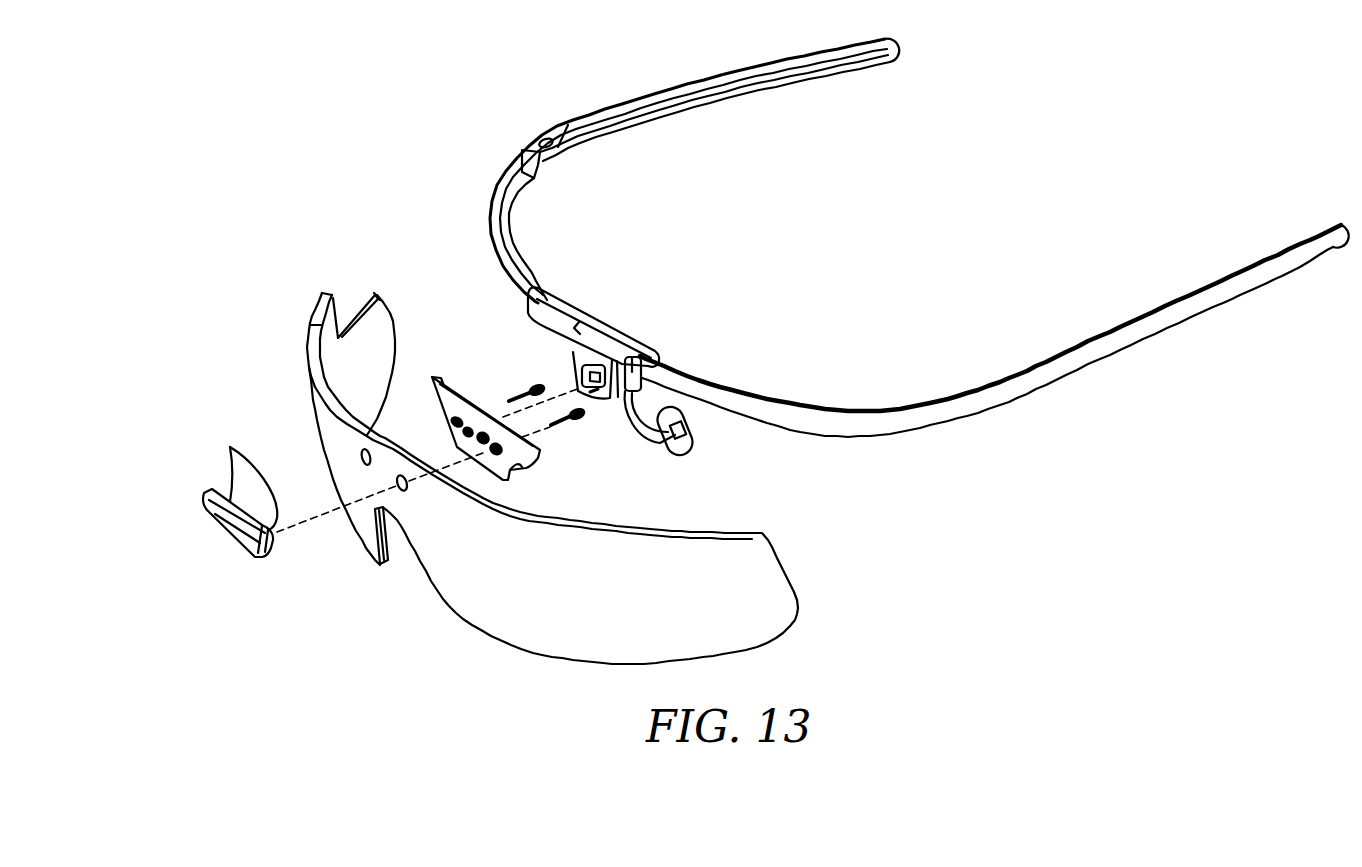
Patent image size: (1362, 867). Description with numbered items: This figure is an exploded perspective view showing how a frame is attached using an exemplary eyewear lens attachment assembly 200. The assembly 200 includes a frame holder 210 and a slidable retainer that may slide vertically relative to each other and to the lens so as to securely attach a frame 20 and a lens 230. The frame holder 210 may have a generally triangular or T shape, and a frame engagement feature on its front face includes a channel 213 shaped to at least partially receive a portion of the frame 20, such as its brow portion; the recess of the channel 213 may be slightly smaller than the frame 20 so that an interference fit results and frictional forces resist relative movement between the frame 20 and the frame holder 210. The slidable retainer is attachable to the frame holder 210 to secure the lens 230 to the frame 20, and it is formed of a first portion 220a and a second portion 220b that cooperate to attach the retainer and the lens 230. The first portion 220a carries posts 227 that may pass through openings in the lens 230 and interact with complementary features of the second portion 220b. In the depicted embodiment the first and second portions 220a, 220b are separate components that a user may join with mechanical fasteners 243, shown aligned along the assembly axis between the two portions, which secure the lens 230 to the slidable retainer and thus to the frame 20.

The eyewear lens attachment assembly 200 is at (176, 195).
The frame 20 is at (635, 433).
The frame holder 210 is at (612, 318).
The channel 213 is at (665, 360).
The first portion 220a is at (213, 520).
The second portion 220b is at (460, 385).
The posts 227 is at (233, 475).
The lens 230 is at (478, 608).
The mechanical fasteners 243 is at (519, 396).